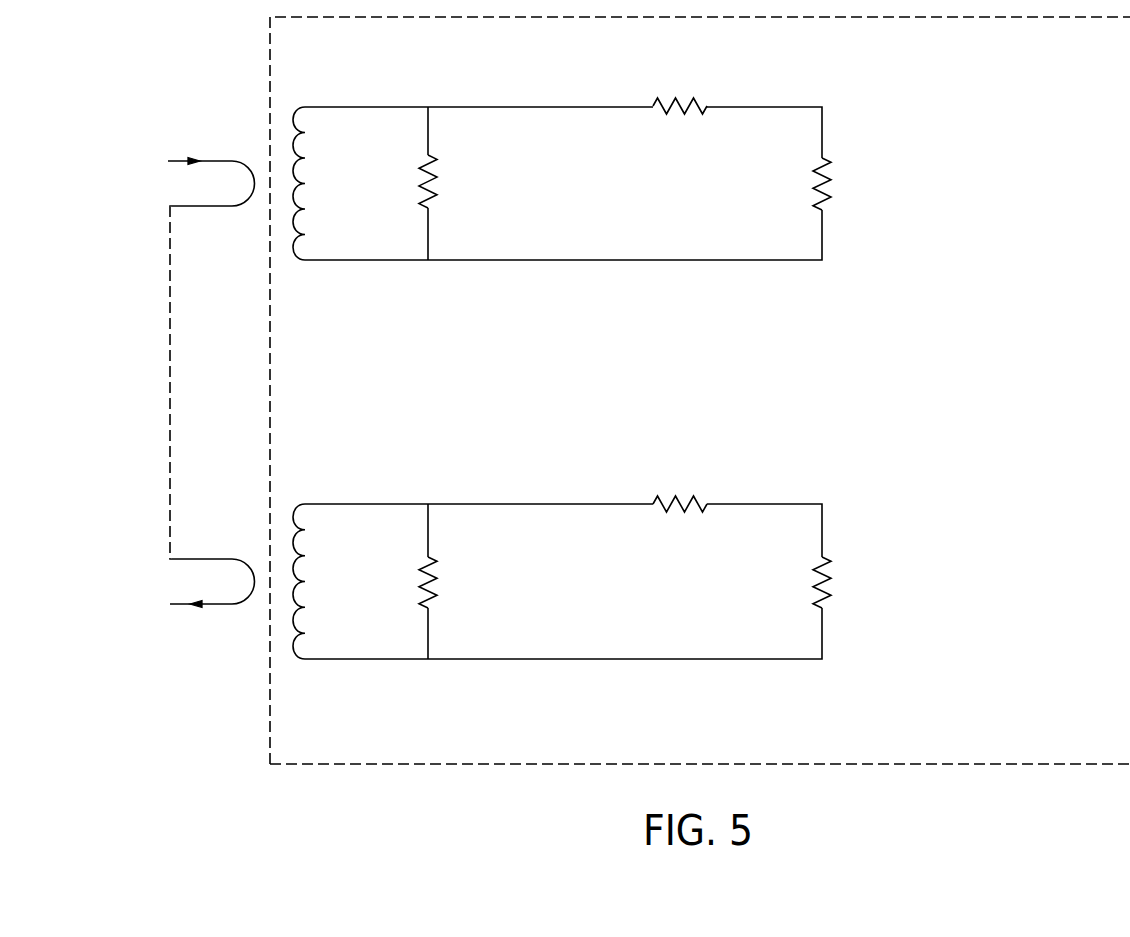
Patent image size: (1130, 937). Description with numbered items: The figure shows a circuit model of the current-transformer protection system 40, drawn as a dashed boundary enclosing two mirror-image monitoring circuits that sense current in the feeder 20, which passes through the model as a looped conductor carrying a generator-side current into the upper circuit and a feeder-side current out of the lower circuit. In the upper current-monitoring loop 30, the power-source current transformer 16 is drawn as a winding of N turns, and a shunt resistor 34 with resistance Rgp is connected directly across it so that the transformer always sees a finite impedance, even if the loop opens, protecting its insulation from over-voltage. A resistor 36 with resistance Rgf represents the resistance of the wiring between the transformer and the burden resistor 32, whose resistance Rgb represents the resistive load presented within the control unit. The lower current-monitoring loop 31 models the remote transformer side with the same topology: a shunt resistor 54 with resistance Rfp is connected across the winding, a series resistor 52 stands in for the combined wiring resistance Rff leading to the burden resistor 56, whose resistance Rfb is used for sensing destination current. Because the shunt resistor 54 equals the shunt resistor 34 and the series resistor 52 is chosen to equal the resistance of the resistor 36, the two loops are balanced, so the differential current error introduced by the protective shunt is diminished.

The power-source current transformer 16 is at (293, 139).
The feeder 20 is at (168, 383).
The current-monitoring loop 30 is at (531, 106).
The current-monitoring loop 31 is at (531, 504).
The burden resistor 32 is at (814, 189).
The shunt resistor 34 is at (421, 169).
The resistor 36 is at (668, 112).
The current-transformer protection system 40 is at (268, 264).
The series resistor 52 is at (668, 510).
The shunt resistor 54 is at (421, 567).
The burden resistor 56 is at (814, 588).